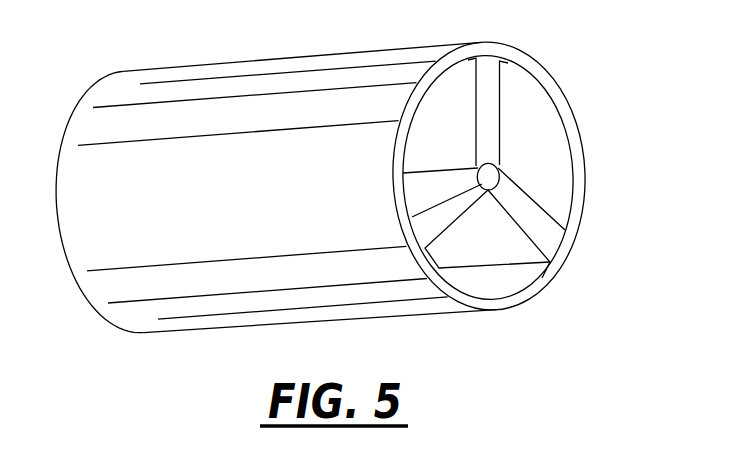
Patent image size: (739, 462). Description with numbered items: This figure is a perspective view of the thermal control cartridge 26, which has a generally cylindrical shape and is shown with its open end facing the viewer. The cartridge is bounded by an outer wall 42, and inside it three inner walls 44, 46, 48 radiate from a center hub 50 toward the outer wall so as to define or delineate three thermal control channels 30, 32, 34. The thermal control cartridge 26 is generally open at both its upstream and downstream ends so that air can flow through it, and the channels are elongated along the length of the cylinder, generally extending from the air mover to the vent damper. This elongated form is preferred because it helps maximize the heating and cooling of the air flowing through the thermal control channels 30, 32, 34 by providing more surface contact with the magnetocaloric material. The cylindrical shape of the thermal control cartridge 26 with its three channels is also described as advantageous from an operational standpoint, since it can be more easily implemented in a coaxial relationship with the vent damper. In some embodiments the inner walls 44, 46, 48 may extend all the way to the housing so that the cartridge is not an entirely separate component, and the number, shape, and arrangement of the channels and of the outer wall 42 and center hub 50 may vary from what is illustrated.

The thermal control cartridge 26 is at (316, 62).
The thermal control channel 30 is at (442, 90).
The thermal control channel 32 is at (517, 277).
The thermal control channel 34 is at (553, 147).
The outer wall 42 is at (197, 310).
The inner wall 44 is at (492, 90).
The inner wall 46 is at (435, 217).
The inner wall 48 is at (537, 222).
The center hub 50 is at (484, 173).